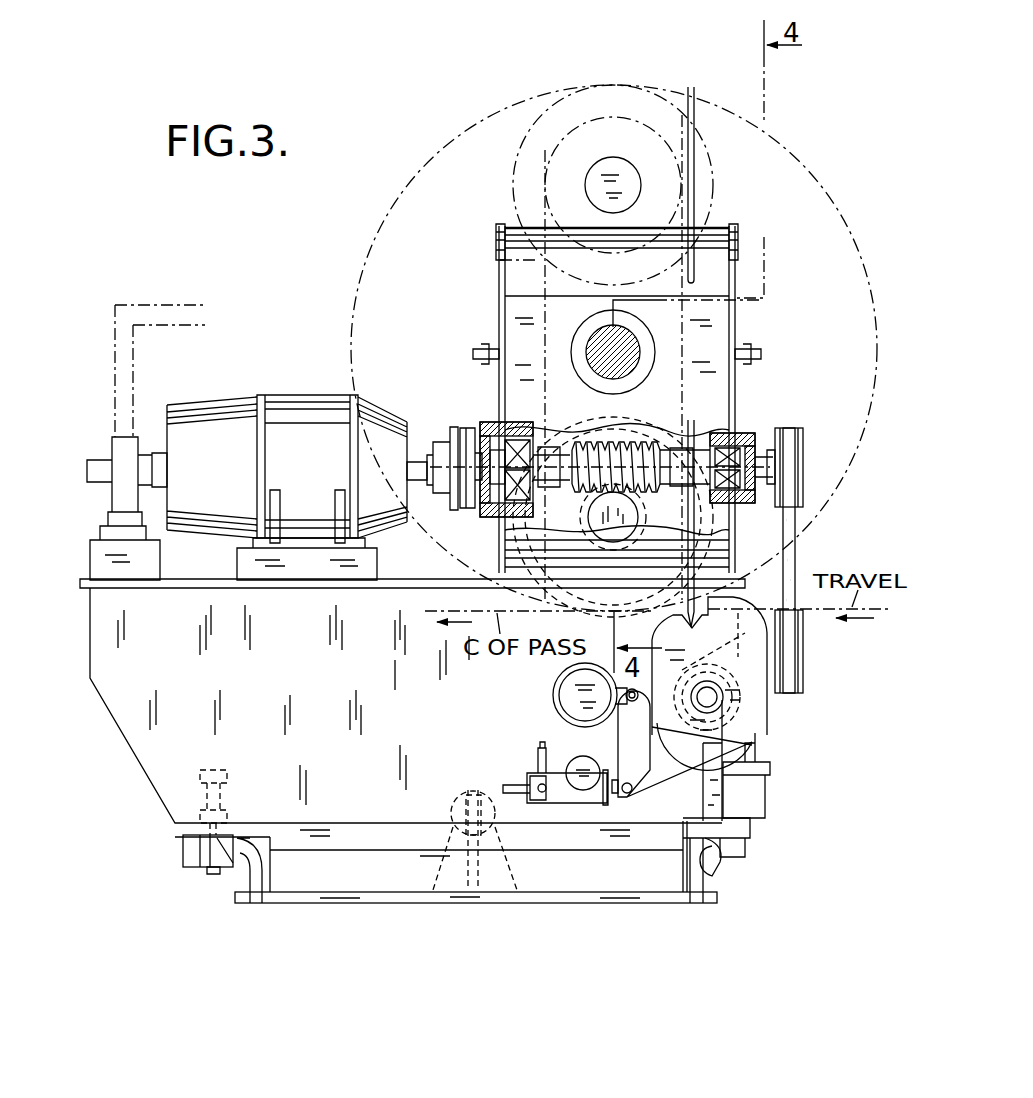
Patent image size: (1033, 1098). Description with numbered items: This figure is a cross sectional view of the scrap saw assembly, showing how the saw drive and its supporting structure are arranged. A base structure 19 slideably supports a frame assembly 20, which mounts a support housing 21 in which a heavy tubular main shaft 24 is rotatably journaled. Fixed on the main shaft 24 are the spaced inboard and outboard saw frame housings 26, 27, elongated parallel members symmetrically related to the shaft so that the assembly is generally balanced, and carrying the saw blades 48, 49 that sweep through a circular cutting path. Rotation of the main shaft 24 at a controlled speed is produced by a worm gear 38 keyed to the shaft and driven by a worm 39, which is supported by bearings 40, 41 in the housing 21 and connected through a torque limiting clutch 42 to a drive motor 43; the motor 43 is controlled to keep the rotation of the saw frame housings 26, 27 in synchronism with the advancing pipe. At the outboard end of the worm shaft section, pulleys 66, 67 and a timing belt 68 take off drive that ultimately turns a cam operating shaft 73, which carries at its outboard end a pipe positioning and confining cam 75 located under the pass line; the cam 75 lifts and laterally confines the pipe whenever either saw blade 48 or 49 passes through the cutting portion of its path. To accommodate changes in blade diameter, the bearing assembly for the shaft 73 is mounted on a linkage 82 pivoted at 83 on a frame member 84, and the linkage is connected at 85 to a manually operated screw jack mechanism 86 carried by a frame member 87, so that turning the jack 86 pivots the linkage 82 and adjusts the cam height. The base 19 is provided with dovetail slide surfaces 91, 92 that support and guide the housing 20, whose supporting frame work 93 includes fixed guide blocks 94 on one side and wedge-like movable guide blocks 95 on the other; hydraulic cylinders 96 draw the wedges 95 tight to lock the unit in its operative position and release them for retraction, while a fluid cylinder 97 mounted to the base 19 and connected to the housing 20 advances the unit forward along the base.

The base structure 19 is at (377, 912).
The frame assembly 20 is at (128, 761).
The support housing 21 is at (518, 262).
The main shaft 24 is at (606, 350).
The inboard saw frame housing 26 is at (651, 92).
The outboard saw frame housing 27 is at (605, 117).
The worm gear 38 is at (614, 440).
The worm 39 is at (586, 487).
The bearing 40 is at (733, 438).
The bearing 41 is at (508, 438).
The torque limiting clutch 42 is at (466, 509).
The drive motor 43 is at (303, 407).
The saw blade 48 is at (556, 553).
The saw blade 49 is at (696, 172).
The pulley 66 is at (798, 452).
The pulley 67 is at (800, 665).
The timing belt 68 is at (790, 566).
The cam operating shaft 73 is at (714, 692).
The pipe positioning and confining cam 75 is at (748, 708).
The linkage 82 is at (655, 770).
The pivot 83 is at (633, 702).
The frame member 84 is at (554, 688).
The connection 85 is at (627, 795).
The screw jack mechanism 86 is at (562, 805).
The frame member 87 is at (576, 762).
The dovetail slide surface 91 is at (250, 840).
The dovetail slide surface 92 is at (256, 880).
The supporting frame work 93 is at (757, 797).
The fixed guide block 94 is at (737, 850).
The movable guide block 95 is at (228, 862).
The hydraulic cylinder 96 is at (226, 793).
The fluid cylinder 97 is at (470, 790).